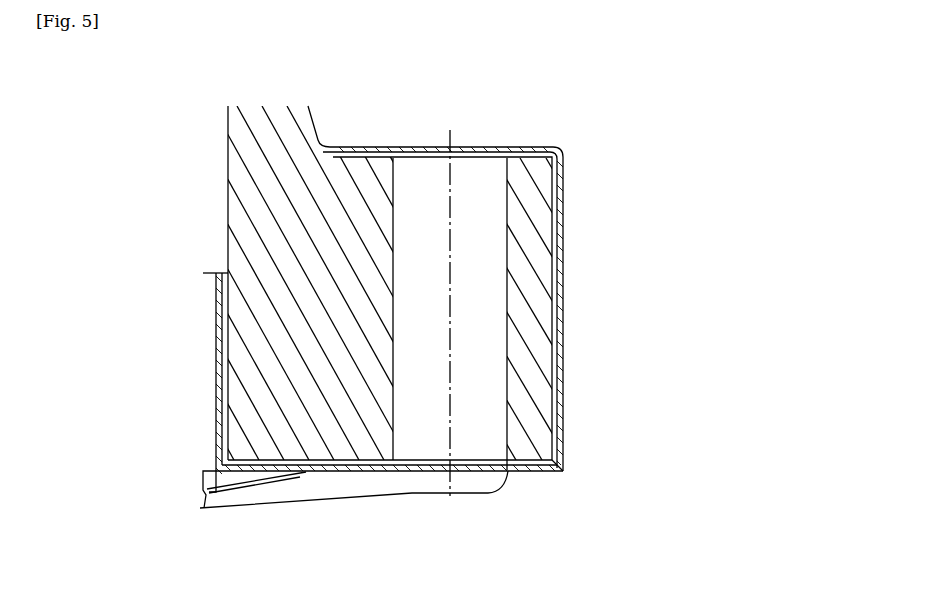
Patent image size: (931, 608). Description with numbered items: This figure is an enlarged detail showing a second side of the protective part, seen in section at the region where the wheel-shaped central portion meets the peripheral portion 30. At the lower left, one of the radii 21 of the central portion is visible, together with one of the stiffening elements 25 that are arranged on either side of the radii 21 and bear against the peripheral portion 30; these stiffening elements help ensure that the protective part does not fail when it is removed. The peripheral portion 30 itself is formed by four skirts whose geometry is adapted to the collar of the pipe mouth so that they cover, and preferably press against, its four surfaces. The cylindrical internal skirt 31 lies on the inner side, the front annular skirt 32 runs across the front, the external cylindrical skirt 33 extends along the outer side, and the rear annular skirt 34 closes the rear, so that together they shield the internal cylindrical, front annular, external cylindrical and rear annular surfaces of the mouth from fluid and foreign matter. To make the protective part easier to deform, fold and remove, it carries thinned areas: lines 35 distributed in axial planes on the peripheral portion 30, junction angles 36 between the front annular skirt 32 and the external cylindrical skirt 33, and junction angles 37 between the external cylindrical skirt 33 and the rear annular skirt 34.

The radii 21 is at (206, 490).
The stiffening elements 25 is at (312, 488).
The peripheral portion 30 is at (410, 306).
The cylindrical internal skirt 31 is at (223, 343).
The front annular skirt 32 is at (362, 472).
The external cylindrical skirt 33 is at (555, 362).
The rear annular skirt 34 is at (490, 150).
The lines 35 is at (564, 300).
The junction angles 36 is at (556, 466).
The junction angles 37 is at (622, 113).